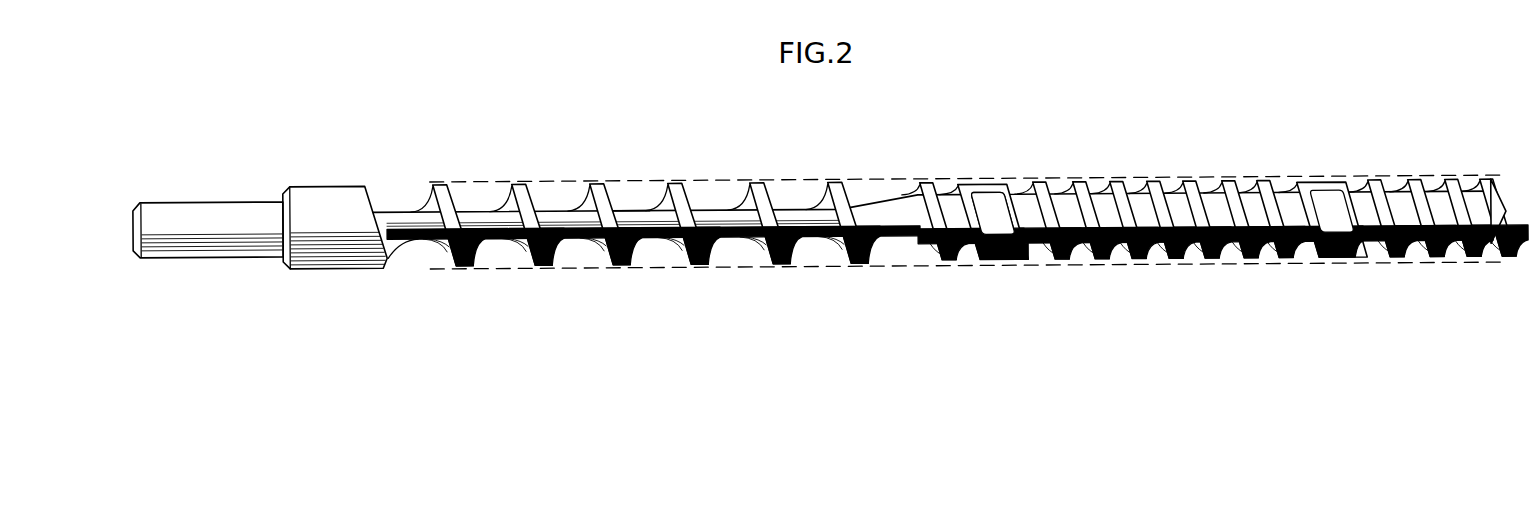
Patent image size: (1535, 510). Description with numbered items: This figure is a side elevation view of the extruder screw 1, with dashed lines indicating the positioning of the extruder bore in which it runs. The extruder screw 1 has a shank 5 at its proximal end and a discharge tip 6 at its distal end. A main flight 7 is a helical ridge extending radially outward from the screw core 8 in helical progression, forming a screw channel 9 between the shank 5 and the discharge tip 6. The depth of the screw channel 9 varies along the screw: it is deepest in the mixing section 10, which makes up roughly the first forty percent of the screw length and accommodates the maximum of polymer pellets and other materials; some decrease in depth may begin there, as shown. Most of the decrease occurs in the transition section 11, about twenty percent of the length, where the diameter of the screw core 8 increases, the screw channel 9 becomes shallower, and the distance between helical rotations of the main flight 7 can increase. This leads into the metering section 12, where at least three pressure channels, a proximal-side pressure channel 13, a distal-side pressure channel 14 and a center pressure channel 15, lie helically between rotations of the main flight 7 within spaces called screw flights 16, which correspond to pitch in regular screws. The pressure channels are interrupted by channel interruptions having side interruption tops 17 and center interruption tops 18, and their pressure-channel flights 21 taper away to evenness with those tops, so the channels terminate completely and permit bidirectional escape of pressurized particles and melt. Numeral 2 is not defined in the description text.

The extruder screw 1 is at (418, 128).
The screw flight 2 is at (706, 183).
The shank 5 is at (216, 208).
The discharge tip 6 is at (1494, 185).
The main flight 7 is at (612, 263).
The screw core 8 is at (507, 242).
The screw channel 9 is at (641, 195).
The mixing section 10 is at (581, 147).
The transition section 11 is at (898, 283).
The metering section 12 is at (1356, 276).
The proximal-side pressure channel 13 is at (972, 252).
The distal-side pressure channel 14 is at (1045, 253).
The center pressure channel 15 is at (1005, 250).
The screw flights 16 is at (1260, 181).
The side interruption tops 17 is at (1225, 245).
The center interruption tops 18 is at (984, 190).
The pressure-channel flights 21 is at (1427, 182).